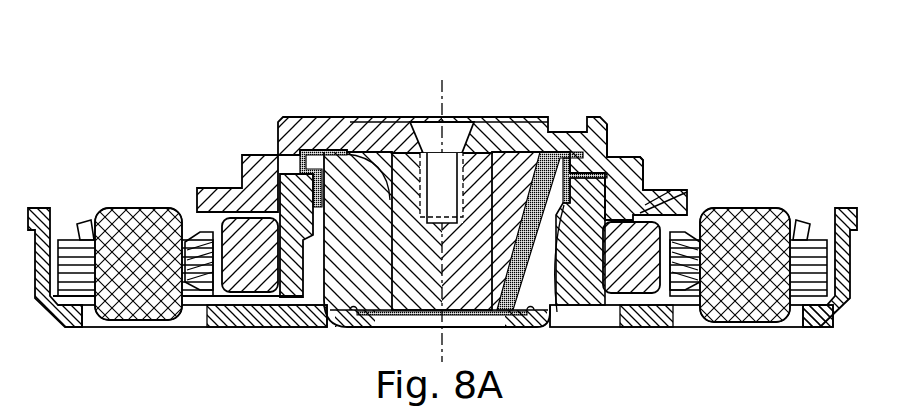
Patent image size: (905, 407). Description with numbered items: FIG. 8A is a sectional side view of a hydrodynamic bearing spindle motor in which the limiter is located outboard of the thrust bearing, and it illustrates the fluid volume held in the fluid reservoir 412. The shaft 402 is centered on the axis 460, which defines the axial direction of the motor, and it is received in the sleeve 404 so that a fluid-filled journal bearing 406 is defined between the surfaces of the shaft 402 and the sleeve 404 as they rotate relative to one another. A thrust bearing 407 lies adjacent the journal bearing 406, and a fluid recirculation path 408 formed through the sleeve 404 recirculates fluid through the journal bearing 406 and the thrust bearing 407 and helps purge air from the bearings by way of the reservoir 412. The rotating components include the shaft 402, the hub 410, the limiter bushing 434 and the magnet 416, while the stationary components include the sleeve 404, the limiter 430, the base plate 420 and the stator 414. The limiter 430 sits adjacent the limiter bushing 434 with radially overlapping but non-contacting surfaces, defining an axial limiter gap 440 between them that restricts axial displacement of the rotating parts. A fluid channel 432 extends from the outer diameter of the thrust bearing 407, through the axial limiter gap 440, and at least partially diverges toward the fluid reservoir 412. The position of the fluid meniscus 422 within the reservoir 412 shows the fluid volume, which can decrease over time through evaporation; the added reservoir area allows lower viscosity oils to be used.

The shaft 402 is at (403, 163).
The sleeve 404 is at (503, 177).
The journal bearing 406 is at (343, 130).
The thrust bearing 407 is at (507, 180).
The fluid recirculation path 408 is at (531, 152).
The hub 410 is at (595, 212).
The fluid reservoir 412 is at (622, 320).
The stator 414 is at (123, 263).
The magnet 416 is at (267, 275).
The base plate 420 is at (220, 323).
The fluid meniscus 422 is at (552, 305).
The limiter 430 is at (567, 170).
The fluid channel 432 is at (603, 153).
The limiter bushing 434 is at (655, 200).
The axial limiter gap 440 is at (632, 180).
The axis 460 is at (443, 100).